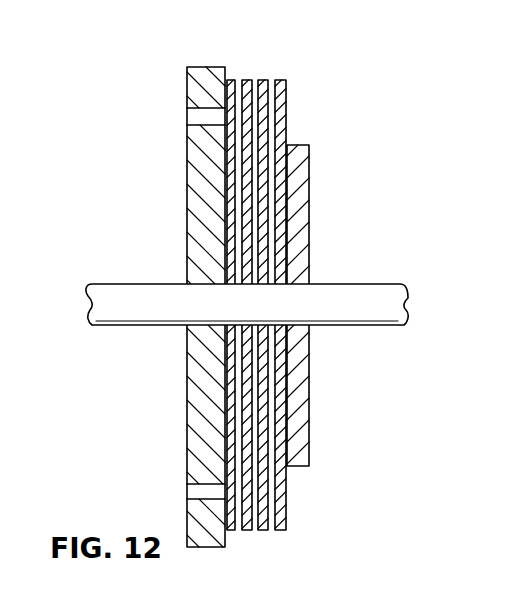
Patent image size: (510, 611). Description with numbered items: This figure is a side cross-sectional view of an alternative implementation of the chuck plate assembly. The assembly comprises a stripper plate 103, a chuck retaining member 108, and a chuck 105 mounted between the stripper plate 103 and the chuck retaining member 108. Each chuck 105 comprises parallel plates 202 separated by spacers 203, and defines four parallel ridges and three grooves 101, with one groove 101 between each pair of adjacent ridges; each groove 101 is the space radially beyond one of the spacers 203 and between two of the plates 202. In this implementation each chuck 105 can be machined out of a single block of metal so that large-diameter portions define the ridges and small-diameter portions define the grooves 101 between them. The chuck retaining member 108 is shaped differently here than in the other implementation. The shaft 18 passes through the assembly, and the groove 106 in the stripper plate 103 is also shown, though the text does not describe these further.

The shaft 18 is at (145, 284).
The groove 101 is at (275, 532).
The stripper plate 103 is at (187, 78).
The chuck 105 is at (287, 75).
The groove 106 is at (190, 118).
The chuck retaining member 108 is at (310, 170).
The parallel plates 202 is at (279, 80).
The spacers 203 is at (268, 229).